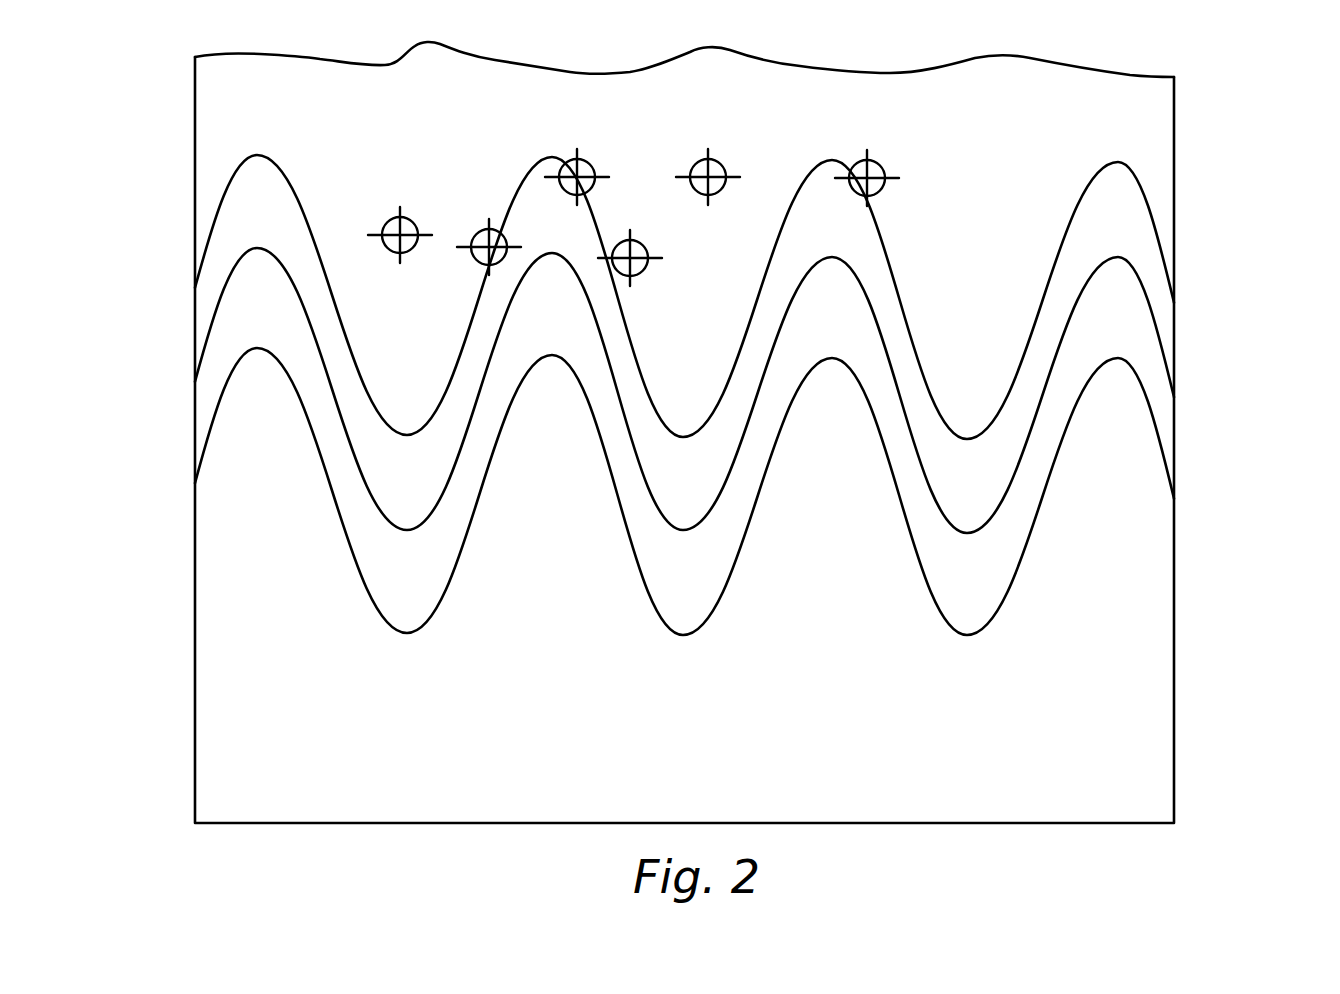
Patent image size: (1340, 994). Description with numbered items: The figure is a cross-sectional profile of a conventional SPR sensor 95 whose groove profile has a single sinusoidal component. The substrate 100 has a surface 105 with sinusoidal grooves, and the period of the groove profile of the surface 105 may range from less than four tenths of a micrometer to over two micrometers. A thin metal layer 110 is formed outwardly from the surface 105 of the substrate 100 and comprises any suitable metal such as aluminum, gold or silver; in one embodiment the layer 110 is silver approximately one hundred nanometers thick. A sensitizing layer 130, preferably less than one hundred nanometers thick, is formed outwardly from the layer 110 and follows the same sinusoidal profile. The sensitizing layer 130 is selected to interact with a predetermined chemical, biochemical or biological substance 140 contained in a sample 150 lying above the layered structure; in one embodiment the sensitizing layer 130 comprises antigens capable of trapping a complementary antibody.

The SPR sensor 95 is at (1236, 162).
The substrate 100 is at (667, 739).
The surface 105 is at (208, 483).
The thin metal layer 110 is at (667, 584).
The sensitizing layer 130 is at (667, 489).
The substance 140 is at (880, 163).
The sample 150 is at (1090, 82).